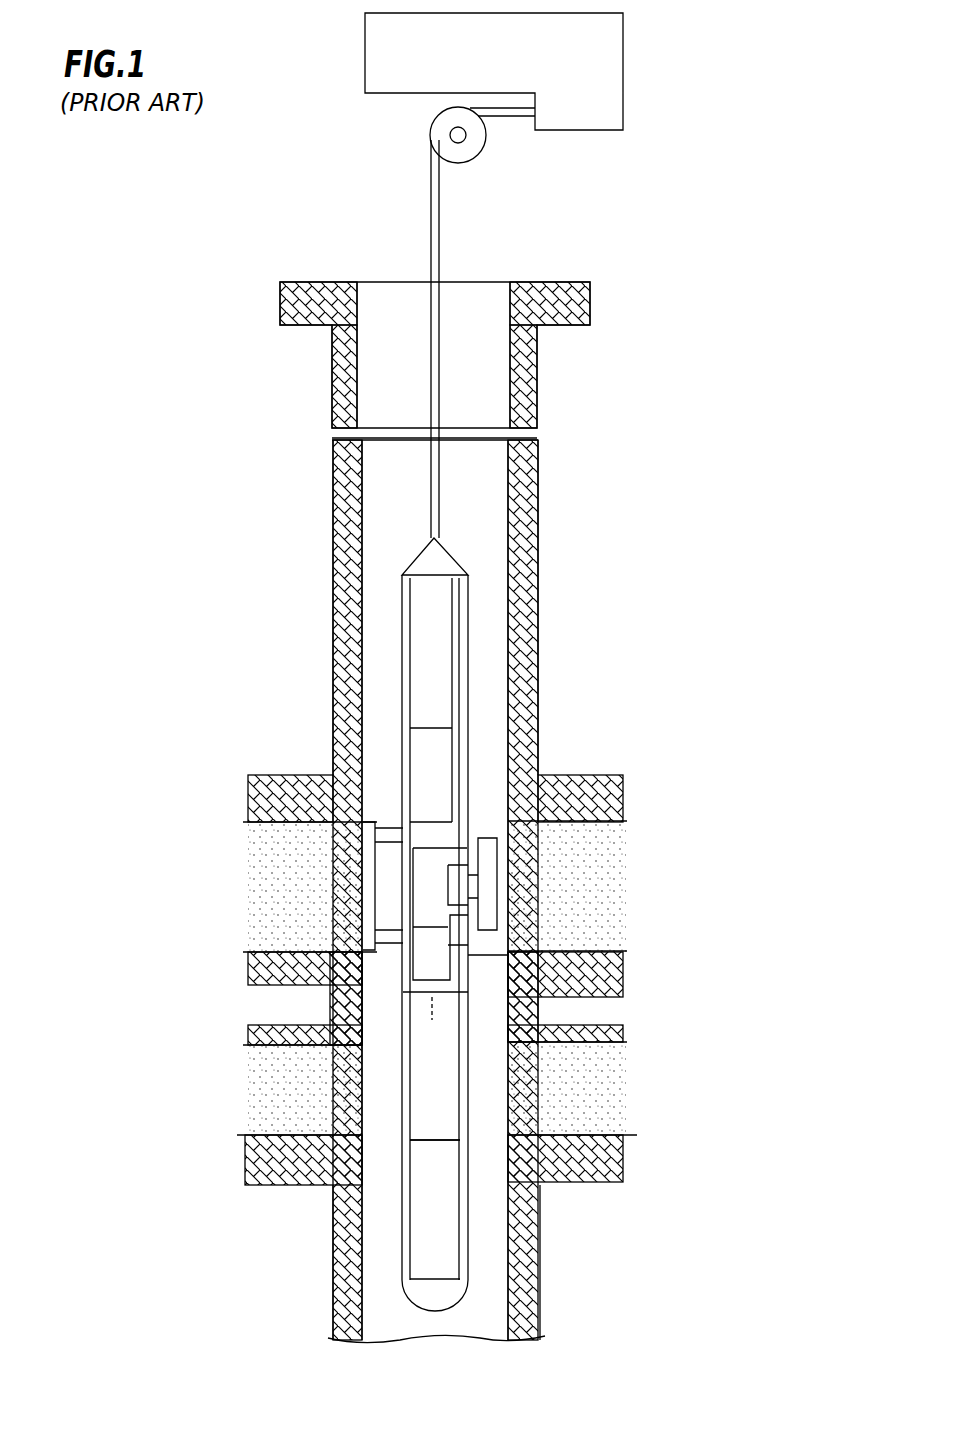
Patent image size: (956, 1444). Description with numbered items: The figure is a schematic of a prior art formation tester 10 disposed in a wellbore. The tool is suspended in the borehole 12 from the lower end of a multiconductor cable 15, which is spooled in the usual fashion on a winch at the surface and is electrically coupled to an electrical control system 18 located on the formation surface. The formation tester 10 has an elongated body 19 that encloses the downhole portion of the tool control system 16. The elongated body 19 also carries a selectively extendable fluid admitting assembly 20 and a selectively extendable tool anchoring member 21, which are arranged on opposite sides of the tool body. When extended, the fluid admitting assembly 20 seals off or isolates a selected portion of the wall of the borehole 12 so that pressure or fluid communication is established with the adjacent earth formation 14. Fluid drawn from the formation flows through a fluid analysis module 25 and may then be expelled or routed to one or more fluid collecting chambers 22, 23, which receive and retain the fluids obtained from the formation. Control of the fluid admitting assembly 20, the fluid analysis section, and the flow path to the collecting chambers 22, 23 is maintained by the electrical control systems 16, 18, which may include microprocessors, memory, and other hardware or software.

The formation tester 10 is at (470, 924).
The borehole 12 is at (508, 306).
The earth formation 14 is at (612, 909).
The multiconductor cable 15 is at (428, 203).
The tool control system 16 is at (443, 789).
The electrical control system 18 is at (575, 131).
The elongated body 19 is at (452, 610).
The fluid admitting assembly 20 is at (497, 850).
The tool anchoring member 21 is at (362, 862).
The fluid collecting chamber 22 is at (450, 1072).
The fluid collecting chamber 23 is at (450, 1197).
The fluid analysis module 25 is at (513, 957).